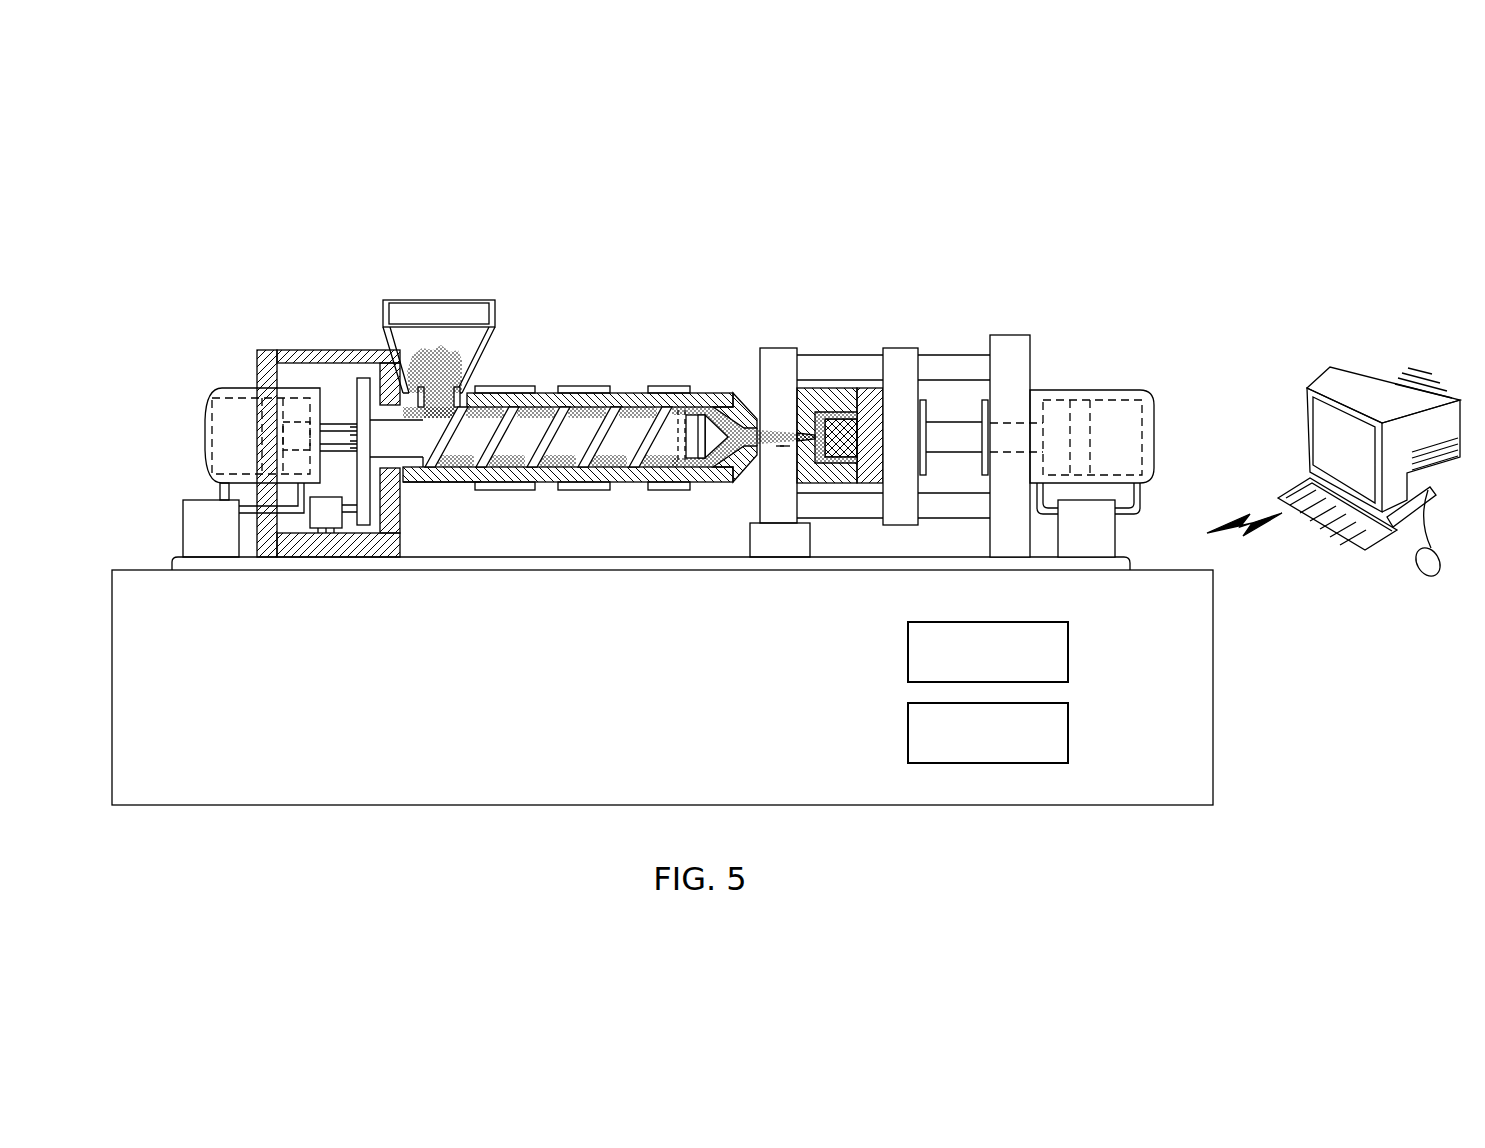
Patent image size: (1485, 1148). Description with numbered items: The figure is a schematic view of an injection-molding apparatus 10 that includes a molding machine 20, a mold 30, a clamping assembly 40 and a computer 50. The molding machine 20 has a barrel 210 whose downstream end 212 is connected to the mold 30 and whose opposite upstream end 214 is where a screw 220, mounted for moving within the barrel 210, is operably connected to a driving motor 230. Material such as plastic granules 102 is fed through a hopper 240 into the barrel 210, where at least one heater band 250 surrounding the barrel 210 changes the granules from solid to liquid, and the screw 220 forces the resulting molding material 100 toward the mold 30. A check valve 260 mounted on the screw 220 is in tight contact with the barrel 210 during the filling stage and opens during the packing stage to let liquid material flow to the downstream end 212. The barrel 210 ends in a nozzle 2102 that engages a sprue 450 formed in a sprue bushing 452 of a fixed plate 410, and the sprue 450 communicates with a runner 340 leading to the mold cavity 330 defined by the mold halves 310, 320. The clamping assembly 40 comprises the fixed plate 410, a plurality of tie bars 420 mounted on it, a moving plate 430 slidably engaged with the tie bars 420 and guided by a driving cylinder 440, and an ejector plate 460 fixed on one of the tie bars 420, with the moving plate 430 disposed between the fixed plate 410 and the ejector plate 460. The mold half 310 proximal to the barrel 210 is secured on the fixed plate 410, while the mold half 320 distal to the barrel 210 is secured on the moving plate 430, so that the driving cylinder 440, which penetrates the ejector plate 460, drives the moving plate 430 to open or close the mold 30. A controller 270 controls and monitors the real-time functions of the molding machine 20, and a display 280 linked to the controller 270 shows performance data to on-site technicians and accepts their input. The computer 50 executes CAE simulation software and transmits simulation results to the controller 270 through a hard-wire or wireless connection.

The injection-molding apparatus 10 is at (135, 133).
The molding machine 20 is at (185, 497).
The mold 30 is at (885, 252).
The clamping assembly 40 is at (1130, 290).
The computer 50 is at (1345, 372).
The molding material 100 is at (718, 418).
The plastic granules 102 is at (441, 358).
The barrel 210 is at (547, 393).
The downstream end 212 is at (753, 474).
The upstream end 214 is at (423, 486).
The screw 220 is at (628, 432).
The driving motor 230 is at (233, 390).
The hopper 240 is at (383, 310).
The heater band 250 is at (587, 386).
The check valve 260 is at (683, 470).
The controller 270 is at (1068, 733).
The display 280 is at (1068, 652).
The nozzle 2102 is at (755, 425).
The mold half 310 is at (818, 395).
The mold half 320 is at (870, 395).
The mold cavity 330 is at (848, 465).
The runner 340 is at (796, 452).
The fixed plate 410 is at (780, 348).
The tie bars 420 is at (957, 372).
The moving plate 430 is at (903, 348).
The driving cylinder 440 is at (1107, 390).
The sprue 450 is at (785, 452).
The sprue bushing 452 is at (780, 462).
The ejector plate 460 is at (1011, 340).